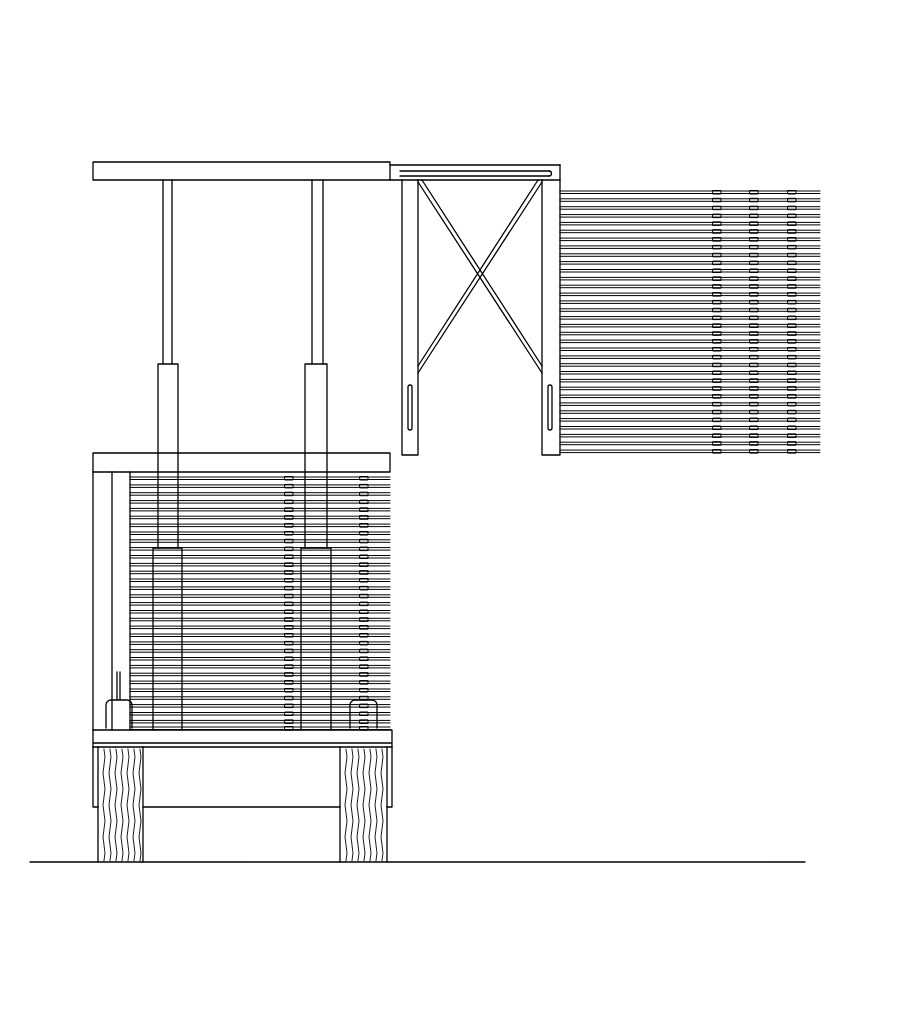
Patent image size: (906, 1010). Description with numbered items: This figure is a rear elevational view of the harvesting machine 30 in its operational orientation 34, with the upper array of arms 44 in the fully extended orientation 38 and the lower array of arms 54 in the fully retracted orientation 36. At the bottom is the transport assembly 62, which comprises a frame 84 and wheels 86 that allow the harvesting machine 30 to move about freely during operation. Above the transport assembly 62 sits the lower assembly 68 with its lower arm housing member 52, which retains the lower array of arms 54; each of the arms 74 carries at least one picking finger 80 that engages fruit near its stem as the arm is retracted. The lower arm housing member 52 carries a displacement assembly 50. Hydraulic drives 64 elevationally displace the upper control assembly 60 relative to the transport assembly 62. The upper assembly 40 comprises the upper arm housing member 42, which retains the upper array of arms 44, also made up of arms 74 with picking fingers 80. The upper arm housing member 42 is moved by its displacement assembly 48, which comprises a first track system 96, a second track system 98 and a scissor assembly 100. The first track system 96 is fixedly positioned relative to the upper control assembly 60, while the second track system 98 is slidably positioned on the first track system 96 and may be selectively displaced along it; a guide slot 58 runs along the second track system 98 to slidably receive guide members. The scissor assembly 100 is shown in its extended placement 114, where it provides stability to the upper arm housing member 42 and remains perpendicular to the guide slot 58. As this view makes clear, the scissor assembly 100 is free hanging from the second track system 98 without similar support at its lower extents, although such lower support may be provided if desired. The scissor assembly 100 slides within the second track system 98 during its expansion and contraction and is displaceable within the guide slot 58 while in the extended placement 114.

The harvesting machine 30 is at (459, 942).
The operational orientation 34 is at (730, 27).
The fully retracted orientation 36 is at (484, 556).
The fully extended orientation 38 is at (774, 137).
The upper assembly 40 is at (401, 328).
The upper arm housing member 42 is at (542, 436).
The upper array of arms 44 is at (685, 415).
The displacement assembly 48 is at (372, 150).
The displacement assembly 50 is at (277, 453).
The lower arm housing member 52 is at (119, 557).
The lower array of arms 54 is at (393, 632).
The guide slot 58 is at (475, 150).
The upper control assembly 60 is at (138, 162).
The transport assembly 62 is at (93, 773).
The hydraulic drives 64 is at (162, 633).
The lower assembly 68 is at (110, 493).
The arms 74 is at (688, 190).
The picking finger 80 is at (750, 192).
The frame 84 is at (228, 808).
The wheels 86 is at (340, 840).
The first track system 96 is at (278, 150).
The second track system 98 is at (580, 158).
The scissor assembly 100 is at (523, 212).
The extended placement 114 is at (518, 347).